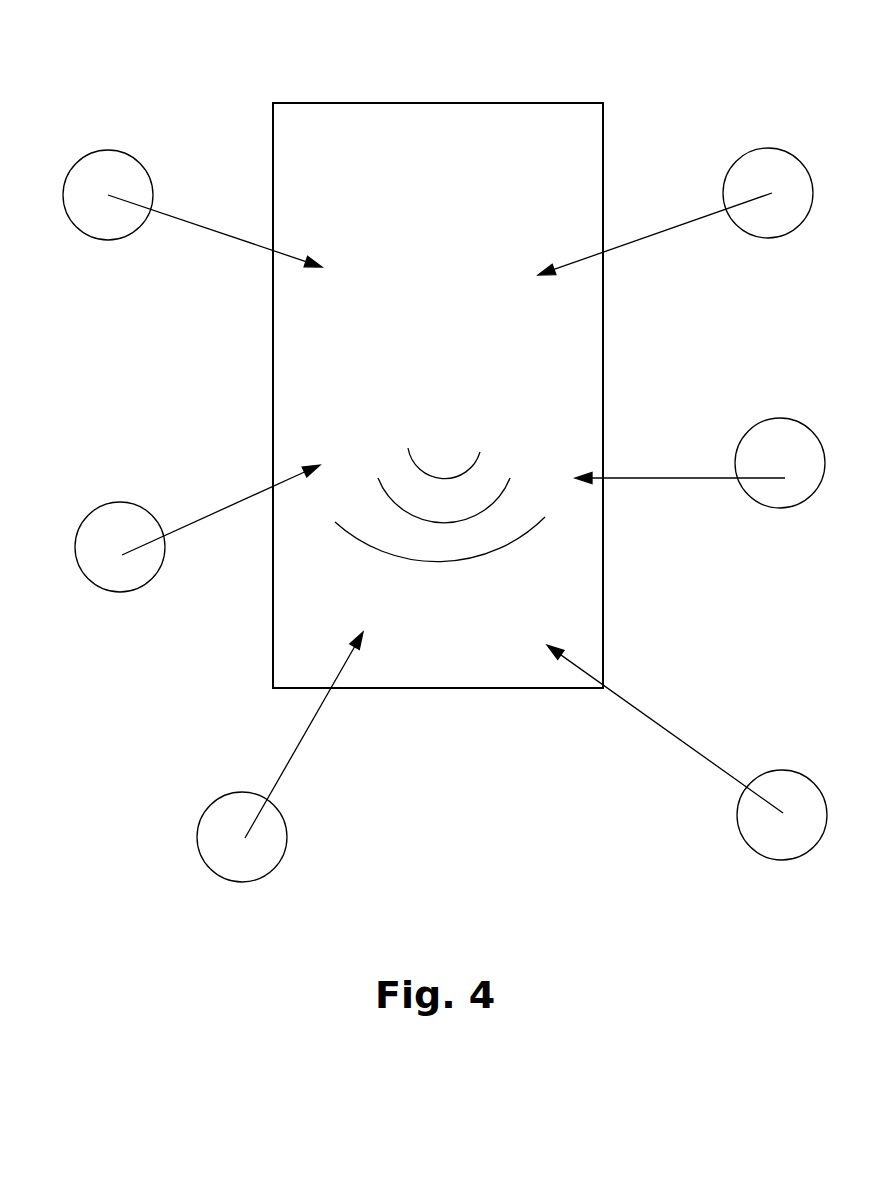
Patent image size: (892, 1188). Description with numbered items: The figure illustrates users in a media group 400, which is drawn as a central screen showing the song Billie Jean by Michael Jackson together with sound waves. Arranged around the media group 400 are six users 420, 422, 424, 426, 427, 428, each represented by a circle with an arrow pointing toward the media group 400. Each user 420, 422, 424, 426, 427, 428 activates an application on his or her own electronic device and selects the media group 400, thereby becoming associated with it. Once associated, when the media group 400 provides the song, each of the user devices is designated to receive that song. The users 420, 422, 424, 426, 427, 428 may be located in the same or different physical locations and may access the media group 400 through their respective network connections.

The media group 400 is at (385, 120).
The user 420 is at (122, 150).
The user 422 is at (135, 503).
The user 424 is at (255, 792).
The fourth user gesture input 426 is at (797, 770).
The user 427 is at (795, 418).
The user 428 is at (782, 148).